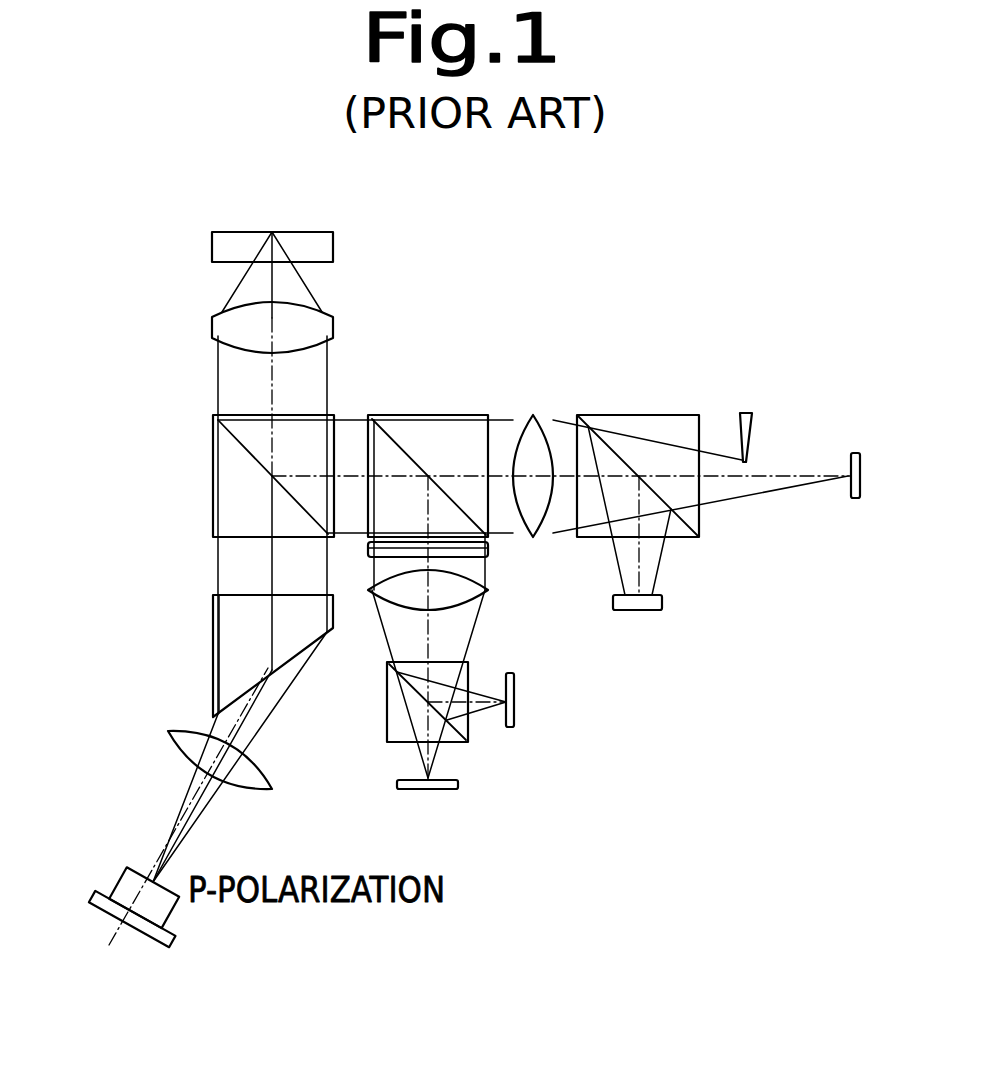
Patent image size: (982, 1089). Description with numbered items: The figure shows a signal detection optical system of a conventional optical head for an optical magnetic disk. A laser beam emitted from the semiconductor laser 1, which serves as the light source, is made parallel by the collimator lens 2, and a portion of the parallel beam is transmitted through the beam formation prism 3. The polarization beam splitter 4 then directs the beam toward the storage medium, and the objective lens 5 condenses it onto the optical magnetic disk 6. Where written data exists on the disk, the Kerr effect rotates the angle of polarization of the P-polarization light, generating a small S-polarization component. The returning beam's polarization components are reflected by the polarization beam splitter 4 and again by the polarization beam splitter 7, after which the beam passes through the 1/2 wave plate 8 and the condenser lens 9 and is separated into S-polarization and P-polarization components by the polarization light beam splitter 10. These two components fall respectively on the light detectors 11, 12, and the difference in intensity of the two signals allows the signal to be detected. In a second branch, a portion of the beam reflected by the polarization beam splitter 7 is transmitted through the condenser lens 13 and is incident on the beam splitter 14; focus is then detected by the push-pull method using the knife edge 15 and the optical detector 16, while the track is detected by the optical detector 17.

The semiconductor laser 1 is at (115, 878).
The collimator lens 2 is at (190, 729).
The beam formation prism 3 is at (212, 617).
The polarization beam splitter 4 is at (212, 450).
The objective lens 5 is at (333, 325).
The optical magnetic disk 6 is at (333, 248).
The polarization beam splitter 7 is at (450, 415).
The 1/2 wave plate 8 is at (488, 549).
The condenser lens 9 is at (488, 590).
The polarization light beam splitter 10 is at (387, 728).
The light detector 11 is at (514, 700).
The light detector 12 is at (458, 785).
The condenser lens 13 is at (535, 415).
The beam splitter 14 is at (657, 415).
The knife edge 15 is at (745, 413).
The optical detector 16 is at (853, 453).
The optical detector 17 is at (662, 602).